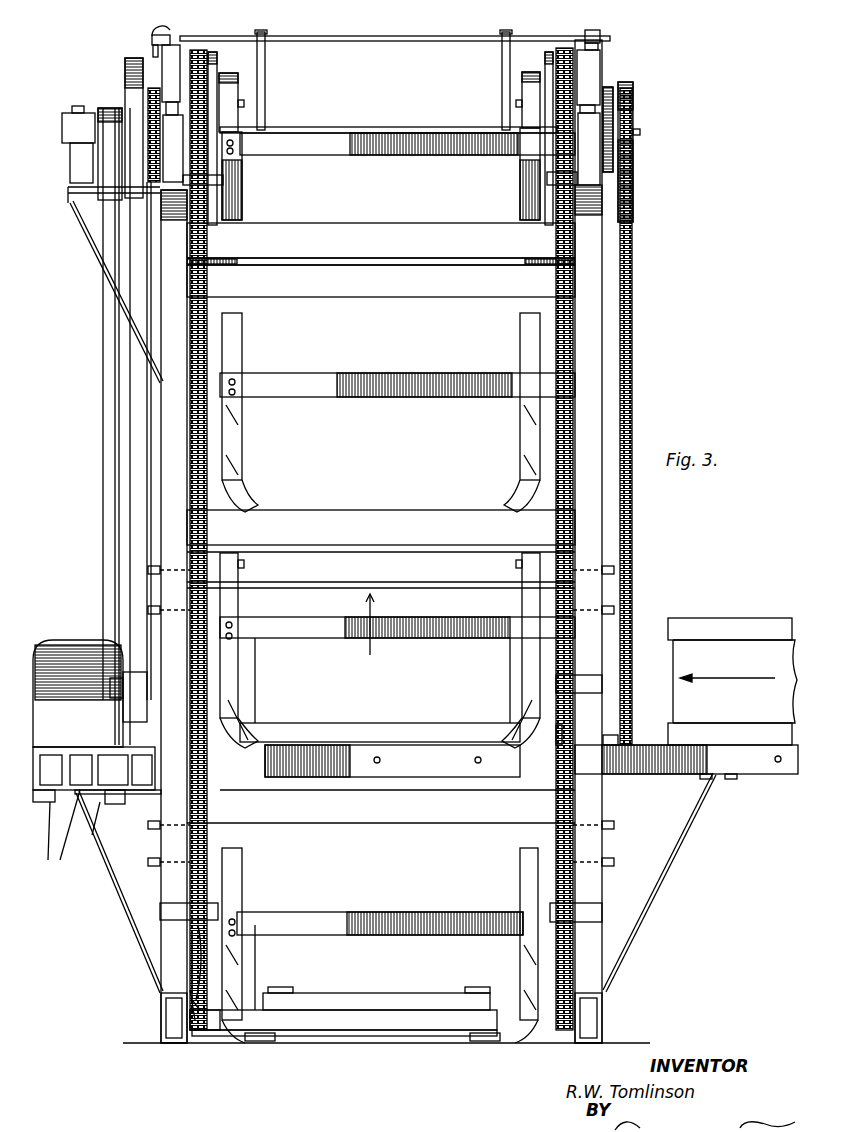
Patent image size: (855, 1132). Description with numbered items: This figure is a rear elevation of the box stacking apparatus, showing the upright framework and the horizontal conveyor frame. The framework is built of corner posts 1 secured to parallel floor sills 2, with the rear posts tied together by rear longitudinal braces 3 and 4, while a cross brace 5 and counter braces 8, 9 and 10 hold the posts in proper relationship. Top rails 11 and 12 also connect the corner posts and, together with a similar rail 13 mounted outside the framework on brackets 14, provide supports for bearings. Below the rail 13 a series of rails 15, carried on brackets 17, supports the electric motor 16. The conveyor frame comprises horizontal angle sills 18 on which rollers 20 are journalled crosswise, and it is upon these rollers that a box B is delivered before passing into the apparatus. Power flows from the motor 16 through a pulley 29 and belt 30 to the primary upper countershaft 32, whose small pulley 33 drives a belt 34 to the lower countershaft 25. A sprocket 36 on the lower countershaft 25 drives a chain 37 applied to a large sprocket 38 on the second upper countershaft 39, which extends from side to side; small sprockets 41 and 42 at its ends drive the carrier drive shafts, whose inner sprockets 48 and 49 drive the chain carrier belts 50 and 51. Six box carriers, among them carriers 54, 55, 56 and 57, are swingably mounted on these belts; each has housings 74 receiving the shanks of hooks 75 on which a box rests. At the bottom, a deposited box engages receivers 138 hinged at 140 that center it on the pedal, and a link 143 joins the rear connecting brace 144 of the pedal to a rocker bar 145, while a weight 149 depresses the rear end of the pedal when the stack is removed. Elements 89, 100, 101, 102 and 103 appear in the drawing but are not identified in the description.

The corner posts 1 is at (172, 434).
The floor sills 2 is at (174, 1010).
The rear longitudinal brace 3 is at (398, 522).
The rear longitudinal brace 4 is at (370, 232).
The cross brace 5 is at (170, 792).
The counter brace 8 is at (374, 818).
The counter brace 9 is at (420, 578).
The counter brace 10 is at (448, 298).
The top rail 11 is at (585, 165).
The top rail 12 is at (178, 165).
The rail 13 is at (68, 180).
The brackets 14 is at (100, 276).
The rails 15 is at (70, 828).
The electric motor 16 is at (64, 644).
The brackets 17 is at (104, 892).
The angle sills 18 is at (672, 777).
The rollers 20 is at (290, 740).
The lower countershaft 25 is at (605, 730).
The pulley 29 is at (122, 706).
The belt 30 is at (135, 508).
The primary upper countershaft 32 is at (80, 145).
The small pulley 33 is at (100, 112).
The belt 34 is at (110, 546).
The sprocket 36 is at (620, 730).
The chain 37 is at (632, 352).
The large sprocket 38 is at (635, 110).
The second upper countershaft 39 is at (140, 110).
The small sprocket 41 is at (68, 215).
The small sprocket 42 is at (615, 185).
The sprocket 48 is at (210, 108).
The sprocket 49 is at (556, 105).
The chain carrier belt 50 is at (205, 215).
The chain carrier belt 51 is at (126, 70).
The box carrier 54 is at (246, 900).
The box carrier 55 is at (336, 614).
The box carrier 56 is at (338, 373).
The box carrier 57 is at (246, 117).
The housings 74 is at (238, 672).
The hooks 75 is at (245, 735).
The shaft end 89 is at (642, 131).
The top bar 100 is at (434, 42).
The cap 101 is at (165, 34).
The post 102 is at (261, 45).
The dome 103 is at (152, 38).
The receivers 138 is at (268, 1040).
The hinge 140 is at (262, 1045).
The link 143 is at (190, 1002).
The rear connecting brace 144 is at (218, 1032).
The rocker bar 145 is at (196, 975).
The weight 149 is at (416, 986).
The box B is at (745, 622).